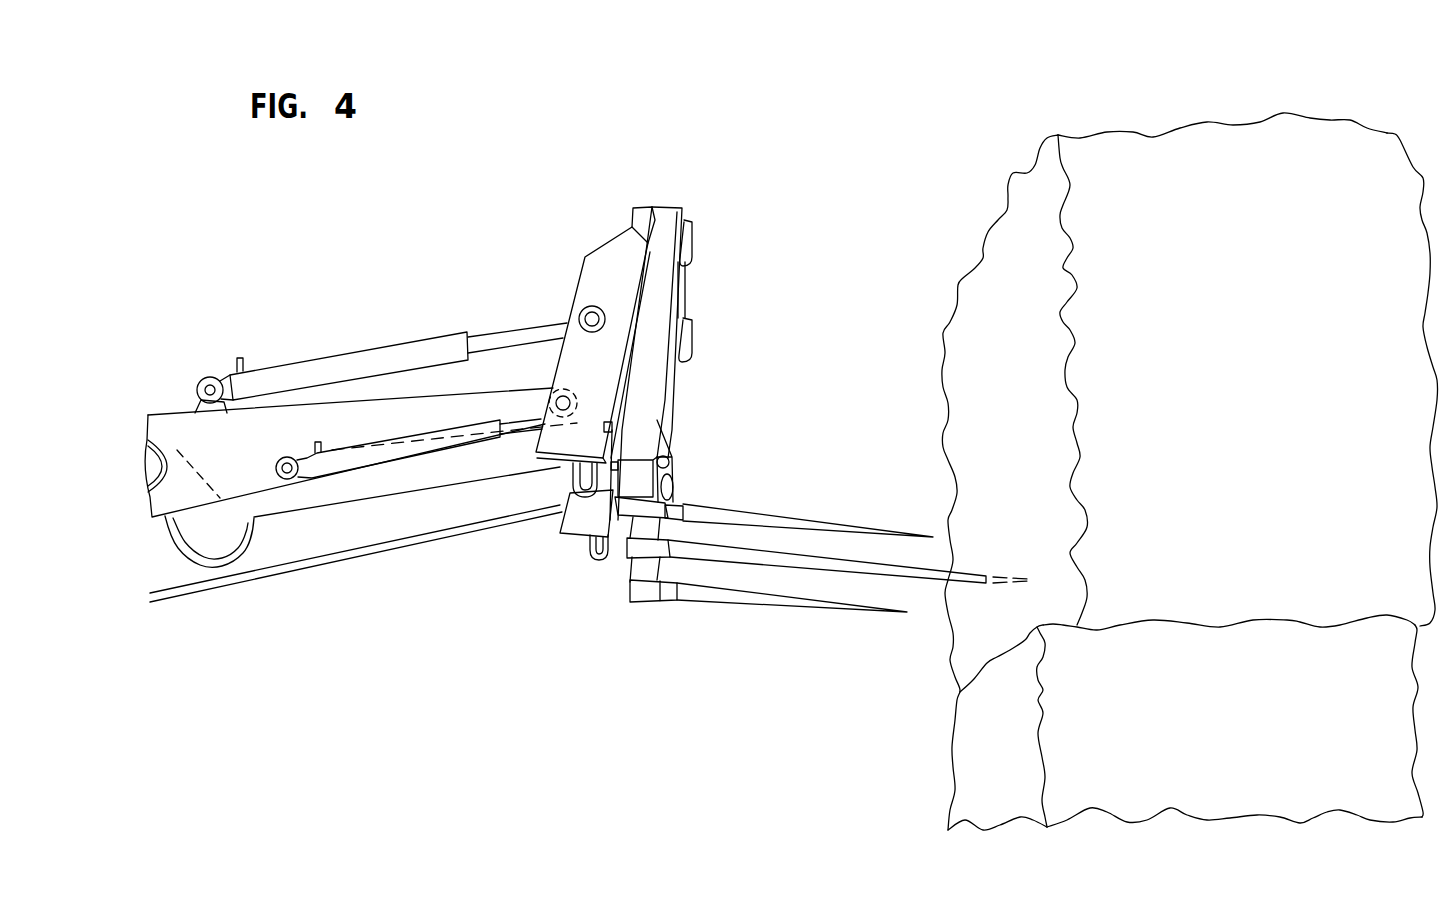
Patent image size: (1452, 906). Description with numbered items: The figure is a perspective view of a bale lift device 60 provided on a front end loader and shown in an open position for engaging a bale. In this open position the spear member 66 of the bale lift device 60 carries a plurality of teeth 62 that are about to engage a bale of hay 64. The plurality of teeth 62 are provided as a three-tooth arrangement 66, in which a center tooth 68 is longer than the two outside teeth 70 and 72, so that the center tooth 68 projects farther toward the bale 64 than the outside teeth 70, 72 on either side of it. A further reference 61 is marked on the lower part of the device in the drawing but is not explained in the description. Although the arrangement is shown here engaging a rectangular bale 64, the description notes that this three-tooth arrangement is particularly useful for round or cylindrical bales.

The bale lift device 60 is at (770, 262).
The fork carriage 61 is at (722, 612).
The plurality of teeth 62 is at (840, 448).
The bale of hay 64 is at (1235, 138).
The spear member 66 is at (795, 505).
The center tooth 68 is at (913, 582).
The outside tooth 70 is at (858, 525).
The outside tooth 72 is at (803, 602).